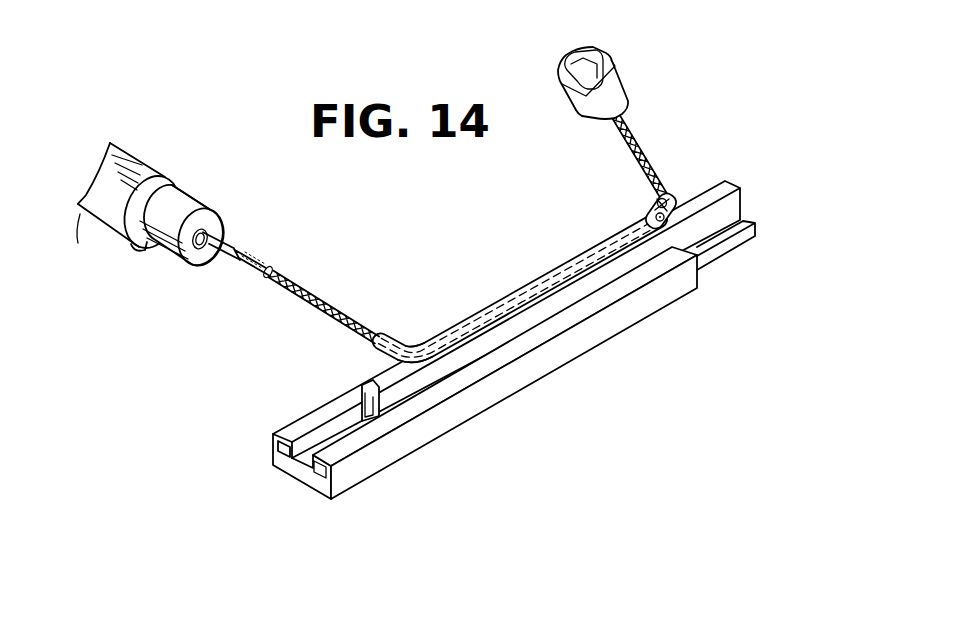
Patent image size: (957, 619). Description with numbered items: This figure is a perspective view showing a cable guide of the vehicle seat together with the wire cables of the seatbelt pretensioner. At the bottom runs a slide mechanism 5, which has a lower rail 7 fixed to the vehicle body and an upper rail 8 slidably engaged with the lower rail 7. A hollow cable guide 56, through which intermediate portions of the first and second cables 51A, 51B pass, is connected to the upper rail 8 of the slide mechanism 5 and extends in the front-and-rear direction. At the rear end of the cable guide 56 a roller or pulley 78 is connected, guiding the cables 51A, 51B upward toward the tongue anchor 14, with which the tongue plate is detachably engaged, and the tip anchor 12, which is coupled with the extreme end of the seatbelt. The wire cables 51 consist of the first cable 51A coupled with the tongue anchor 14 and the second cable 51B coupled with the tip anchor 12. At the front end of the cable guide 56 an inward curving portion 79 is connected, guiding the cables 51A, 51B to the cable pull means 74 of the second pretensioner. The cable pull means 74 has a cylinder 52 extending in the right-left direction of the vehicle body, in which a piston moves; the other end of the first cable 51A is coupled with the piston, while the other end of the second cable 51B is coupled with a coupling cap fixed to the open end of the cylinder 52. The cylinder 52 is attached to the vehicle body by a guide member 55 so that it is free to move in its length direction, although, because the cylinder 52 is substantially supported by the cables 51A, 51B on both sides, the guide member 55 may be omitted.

The slide mechanism 5 is at (497, 403).
The lower rail 7 is at (607, 330).
The upper rail 8 is at (387, 382).
The tip anchor 12 is at (617, 91).
The tongue anchor 14 is at (645, 83).
The wire cable 51 is at (310, 307).
The first cable 51A is at (509, 225).
The second cable 51B is at (634, 146).
The cylinder 52 is at (190, 212).
The guide member 55 is at (130, 153).
The cable guide 56 is at (538, 278).
The cable pull means 74 is at (194, 194).
The roller or pulley 78 is at (645, 212).
The inward curving portion 79 is at (420, 348).